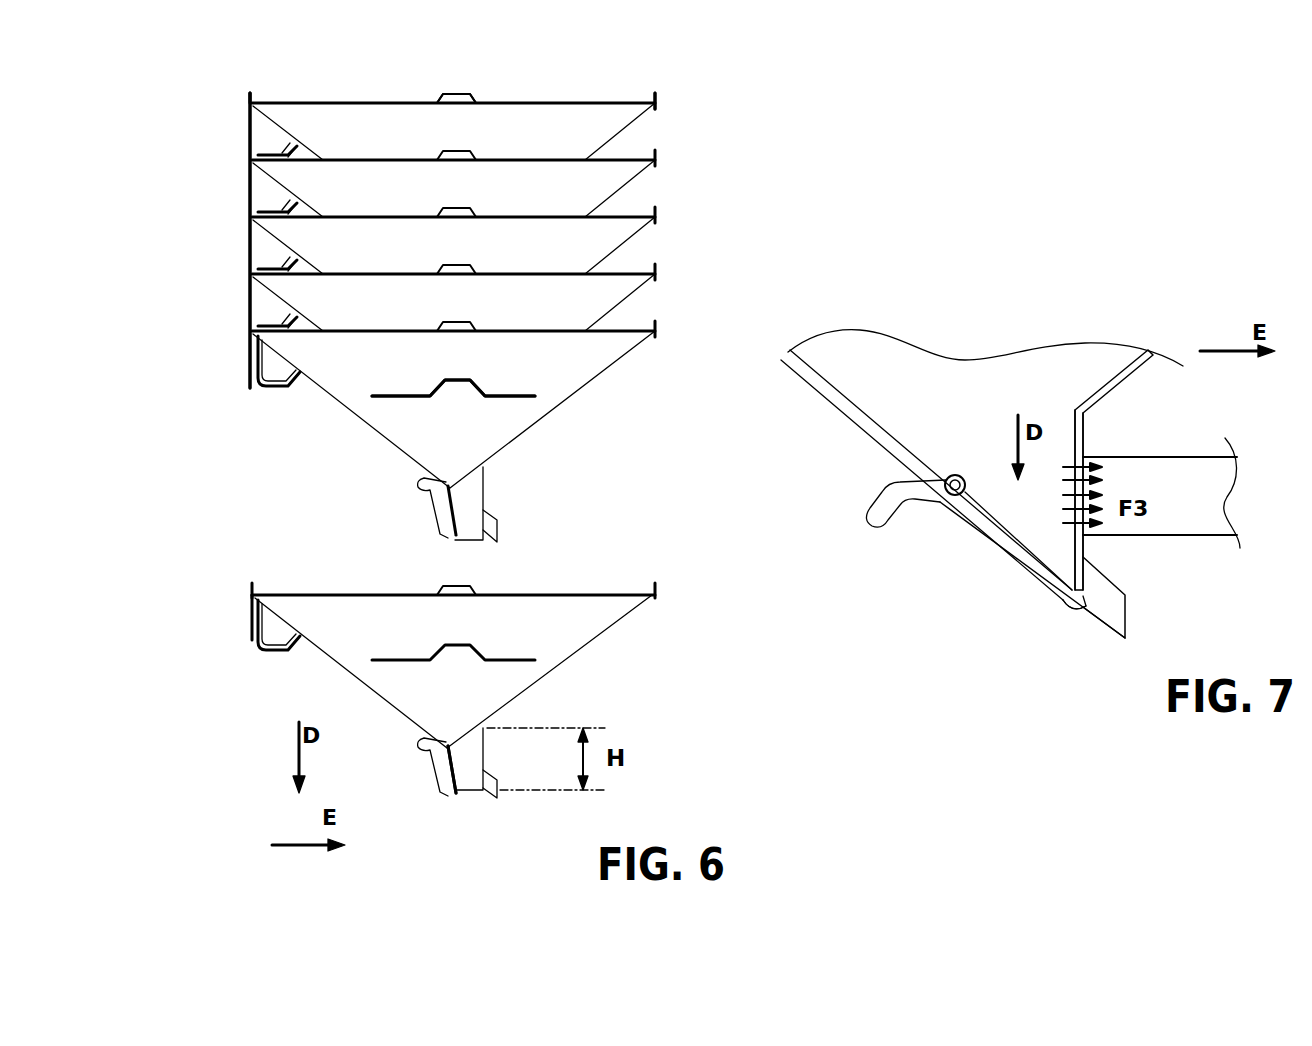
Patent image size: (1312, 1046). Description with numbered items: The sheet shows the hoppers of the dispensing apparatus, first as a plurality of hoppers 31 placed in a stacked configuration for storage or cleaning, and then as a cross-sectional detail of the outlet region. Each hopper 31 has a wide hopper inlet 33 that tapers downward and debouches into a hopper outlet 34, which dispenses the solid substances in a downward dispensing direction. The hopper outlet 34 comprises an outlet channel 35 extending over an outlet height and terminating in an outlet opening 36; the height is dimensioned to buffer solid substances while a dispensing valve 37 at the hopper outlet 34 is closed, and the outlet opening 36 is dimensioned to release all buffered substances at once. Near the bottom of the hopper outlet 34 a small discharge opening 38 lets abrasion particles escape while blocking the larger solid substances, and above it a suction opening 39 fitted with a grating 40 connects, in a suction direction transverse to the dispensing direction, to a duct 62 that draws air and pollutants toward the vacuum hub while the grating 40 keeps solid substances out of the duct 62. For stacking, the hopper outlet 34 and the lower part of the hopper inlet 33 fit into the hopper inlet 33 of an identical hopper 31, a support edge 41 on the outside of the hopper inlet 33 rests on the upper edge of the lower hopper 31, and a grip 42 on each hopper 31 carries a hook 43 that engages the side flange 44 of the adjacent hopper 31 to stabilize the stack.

In FIG. 6, the hopper 31 is at (650, 335).
In FIG. 7, the hopper 31 is at (1109, 272).
In FIG. 6, the hopper inlet 33 is at (578, 632).
In FIG. 7, the hopper inlet 33 is at (910, 365).
In FIG. 6, the hopper outlet 34 is at (472, 768).
In FIG. 7, the hopper outlet 34 is at (998, 500).
In FIG. 6, the outlet channel 35 is at (472, 768).
In FIG. 7, the outlet channel 35 is at (1050, 607).
In FIG. 6, the outlet opening 36 is at (478, 790).
In FIG. 7, the outlet opening 36 is at (1035, 560).
In FIG. 6, the dispensing valve 37 is at (437, 760).
In FIG. 7, the dispensing valve 37 is at (990, 543).
In FIG. 7, the discharge opening 38 is at (1085, 594).
In FIG. 7, the suction opening 39 is at (1085, 492).
In FIG. 7, the grating 40 is at (1085, 492).
In FIG. 6, the support edge 41 is at (397, 220).
In FIG. 6, the grip 42 is at (248, 245).
In FIG. 6, the hook 43 is at (248, 382).
In FIG. 6, the flange 44 is at (248, 100).
In FIG. 7, the duct 62 is at (1210, 520).